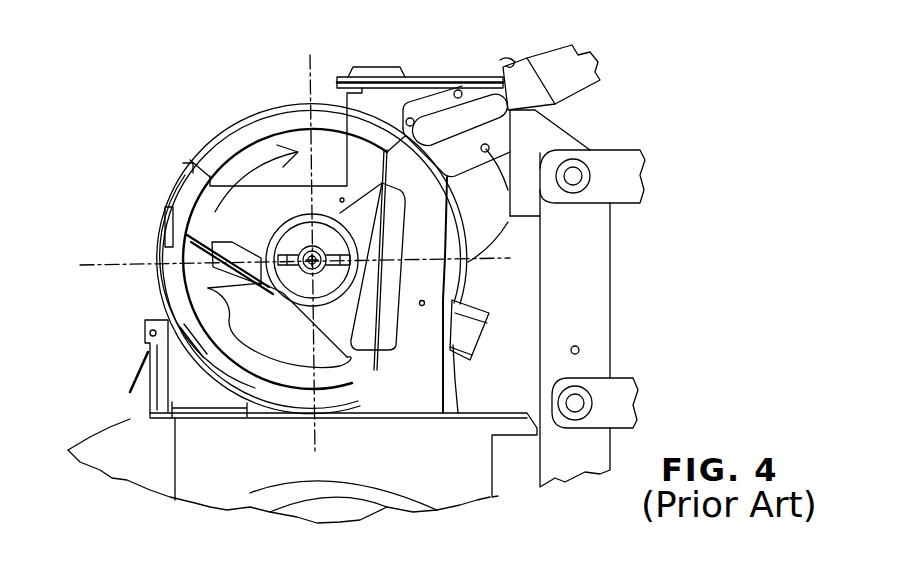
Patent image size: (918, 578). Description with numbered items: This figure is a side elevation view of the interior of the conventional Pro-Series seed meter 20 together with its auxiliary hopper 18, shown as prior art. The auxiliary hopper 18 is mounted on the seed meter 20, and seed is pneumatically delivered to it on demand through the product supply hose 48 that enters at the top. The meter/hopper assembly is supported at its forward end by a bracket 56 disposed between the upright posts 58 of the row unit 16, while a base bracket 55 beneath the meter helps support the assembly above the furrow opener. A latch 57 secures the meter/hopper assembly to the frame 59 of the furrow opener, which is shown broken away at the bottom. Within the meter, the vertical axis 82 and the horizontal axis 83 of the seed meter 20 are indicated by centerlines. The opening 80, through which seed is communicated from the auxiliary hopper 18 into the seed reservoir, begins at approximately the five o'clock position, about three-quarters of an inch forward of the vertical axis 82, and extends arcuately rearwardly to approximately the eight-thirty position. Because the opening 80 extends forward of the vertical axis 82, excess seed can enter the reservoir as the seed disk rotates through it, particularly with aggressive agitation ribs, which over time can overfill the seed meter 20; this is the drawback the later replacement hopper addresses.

The upright post 16 is at (636, 207).
The auxiliary hopper 18 is at (432, 64).
The seed meter 20 is at (229, 100).
The product supply hose 48 is at (580, 80).
The base bracket 55 is at (193, 418).
The bracket 56 is at (553, 135).
The latch 57 is at (145, 352).
The upright posts 58 is at (597, 288).
The frame 59 is at (112, 433).
The opening 80 is at (215, 296).
The vertical axis 82 is at (310, 72).
The horizontal axis 83 is at (108, 267).